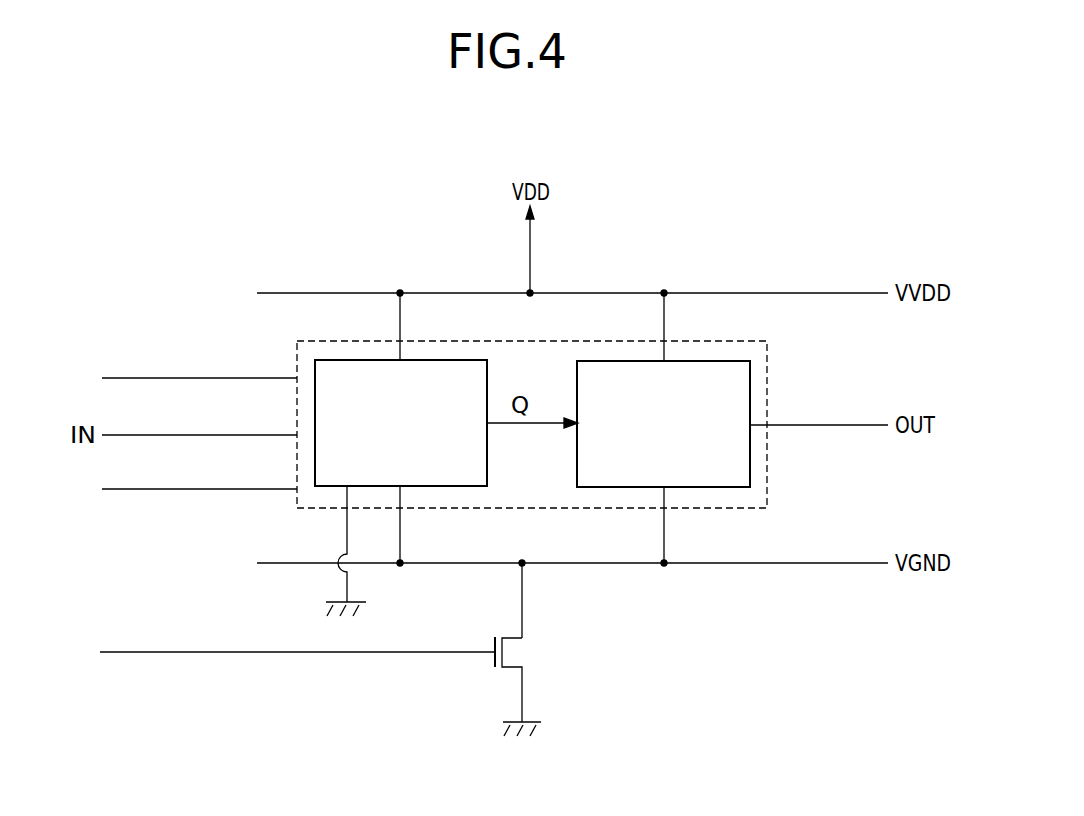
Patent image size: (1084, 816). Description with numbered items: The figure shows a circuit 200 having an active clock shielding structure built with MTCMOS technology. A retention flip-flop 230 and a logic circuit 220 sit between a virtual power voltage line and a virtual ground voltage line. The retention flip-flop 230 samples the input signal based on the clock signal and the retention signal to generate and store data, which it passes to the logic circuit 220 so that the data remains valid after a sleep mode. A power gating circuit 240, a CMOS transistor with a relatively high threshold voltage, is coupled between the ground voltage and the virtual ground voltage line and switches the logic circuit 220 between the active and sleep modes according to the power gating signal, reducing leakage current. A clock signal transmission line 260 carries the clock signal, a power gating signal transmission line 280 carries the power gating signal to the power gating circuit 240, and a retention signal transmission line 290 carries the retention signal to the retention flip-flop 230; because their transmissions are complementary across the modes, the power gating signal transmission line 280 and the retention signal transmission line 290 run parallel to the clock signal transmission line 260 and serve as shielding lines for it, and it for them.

The circuit having the active clock shielding structure 200 is at (473, 122).
The logic circuit 220 is at (697, 361).
The retention flip-flop 230 is at (433, 361).
The power gating circuit 240 is at (533, 650).
The clock signal transmission line 260 is at (194, 374).
The power gating signal transmission line 280 is at (245, 656).
The retention signal transmission line 290 is at (192, 494).